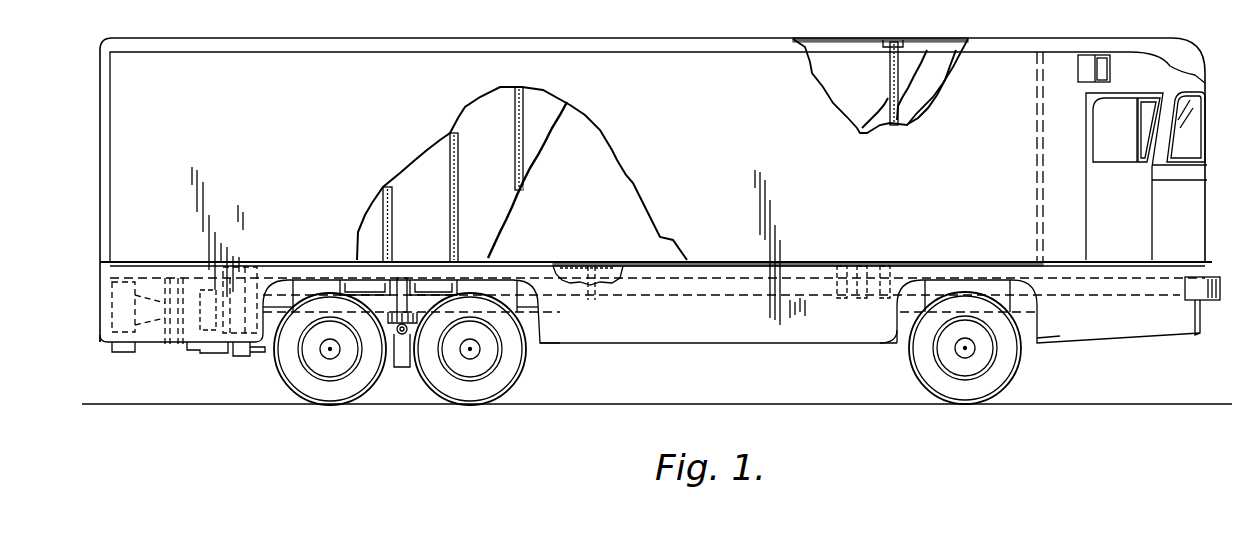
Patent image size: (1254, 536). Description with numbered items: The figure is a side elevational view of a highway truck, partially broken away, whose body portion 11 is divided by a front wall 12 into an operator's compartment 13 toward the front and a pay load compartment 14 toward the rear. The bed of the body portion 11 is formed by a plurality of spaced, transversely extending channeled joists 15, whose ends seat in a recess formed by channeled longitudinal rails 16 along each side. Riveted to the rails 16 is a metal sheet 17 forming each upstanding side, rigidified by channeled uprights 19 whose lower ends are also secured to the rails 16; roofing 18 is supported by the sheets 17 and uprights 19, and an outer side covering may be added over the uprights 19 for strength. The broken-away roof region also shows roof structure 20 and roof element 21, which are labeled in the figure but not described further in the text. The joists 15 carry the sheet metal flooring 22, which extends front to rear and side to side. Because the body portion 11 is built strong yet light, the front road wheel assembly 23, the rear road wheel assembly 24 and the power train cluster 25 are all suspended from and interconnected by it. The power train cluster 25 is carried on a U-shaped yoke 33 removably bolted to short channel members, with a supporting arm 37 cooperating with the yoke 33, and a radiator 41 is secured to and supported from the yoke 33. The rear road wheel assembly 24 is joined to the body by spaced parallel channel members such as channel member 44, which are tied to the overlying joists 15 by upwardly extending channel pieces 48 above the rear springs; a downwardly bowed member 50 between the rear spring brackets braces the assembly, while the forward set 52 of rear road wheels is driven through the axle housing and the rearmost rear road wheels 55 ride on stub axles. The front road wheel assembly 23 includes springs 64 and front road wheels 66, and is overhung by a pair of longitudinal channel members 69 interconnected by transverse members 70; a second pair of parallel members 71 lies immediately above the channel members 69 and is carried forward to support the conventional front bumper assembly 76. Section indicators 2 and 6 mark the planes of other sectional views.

The section line 2- 2 is at (78, 297).
The section line 6- 6 is at (796, 295).
The body portion 11 is at (683, 77).
The front wall 12 is at (1036, 180).
The operator's compartment 13 is at (1116, 125).
The pay load compartment 14 is at (593, 157).
The transverse joists 15 is at (560, 262).
The longitudinal rails 16 is at (712, 280).
The metal sheet 17 is at (942, 66).
The roofing 18 is at (856, 40).
The uprights 19 is at (889, 66).
The roof brace 20 is at (905, 105).
The roof 21 is at (228, 67).
The sheet metal flooring 22 is at (595, 261).
The front road wheel assembly 23 is at (1022, 381).
The rear road wheel assembly 24 is at (537, 381).
The power train cluster 25 is at (226, 354).
The U-shaped yoke 33 is at (160, 285).
The supporting arm 37 is at (228, 322).
The radiator 41 is at (122, 354).
The channel member 44 is at (570, 302).
The channel pieces 48 is at (402, 278).
The downwardly bowed member 50 is at (403, 370).
The forward set of rear road wheels 52 is at (470, 385).
The rear road wheels 55 is at (305, 385).
The springs 64 is at (897, 350).
The front road wheels 66 is at (930, 378).
The channel members 69 is at (1020, 284).
The transverse members 70 is at (575, 417).
The parallel members 71 is at (870, 300).
The front bumper assembly 76 is at (1215, 305).